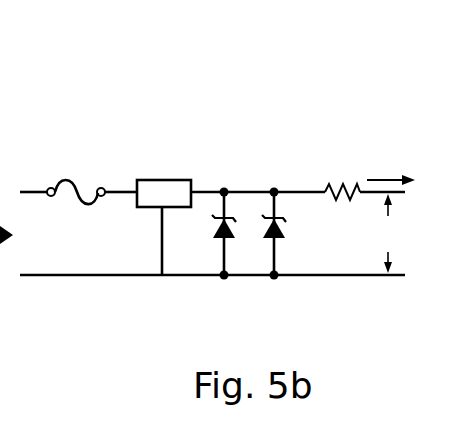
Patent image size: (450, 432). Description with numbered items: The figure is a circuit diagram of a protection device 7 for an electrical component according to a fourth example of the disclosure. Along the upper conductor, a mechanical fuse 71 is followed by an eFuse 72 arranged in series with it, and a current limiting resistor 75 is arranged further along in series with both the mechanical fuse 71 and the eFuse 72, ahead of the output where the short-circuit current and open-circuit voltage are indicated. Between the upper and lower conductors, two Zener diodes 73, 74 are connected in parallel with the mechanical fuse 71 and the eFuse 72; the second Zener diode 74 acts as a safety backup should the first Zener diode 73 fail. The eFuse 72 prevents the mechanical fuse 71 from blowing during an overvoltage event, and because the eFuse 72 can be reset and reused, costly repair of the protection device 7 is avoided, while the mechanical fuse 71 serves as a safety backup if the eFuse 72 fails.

The protection device 7 is at (308, 67).
The mechanical fuse 71 is at (60, 186).
The eFuse 72 is at (150, 178).
The Zener diode 73 is at (213, 278).
The Zener diode 74 is at (262, 278).
The current limiting resistor 75 is at (328, 189).